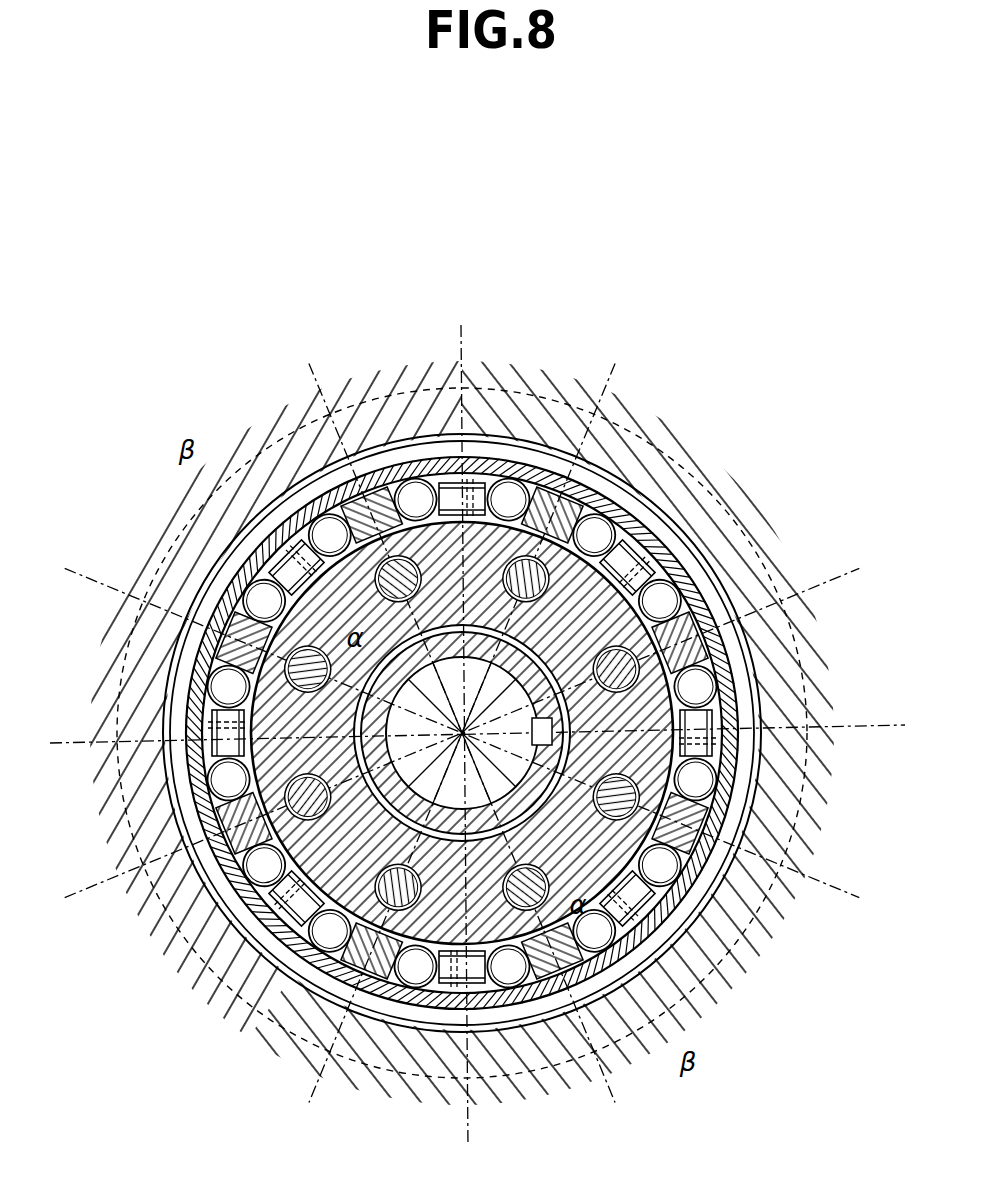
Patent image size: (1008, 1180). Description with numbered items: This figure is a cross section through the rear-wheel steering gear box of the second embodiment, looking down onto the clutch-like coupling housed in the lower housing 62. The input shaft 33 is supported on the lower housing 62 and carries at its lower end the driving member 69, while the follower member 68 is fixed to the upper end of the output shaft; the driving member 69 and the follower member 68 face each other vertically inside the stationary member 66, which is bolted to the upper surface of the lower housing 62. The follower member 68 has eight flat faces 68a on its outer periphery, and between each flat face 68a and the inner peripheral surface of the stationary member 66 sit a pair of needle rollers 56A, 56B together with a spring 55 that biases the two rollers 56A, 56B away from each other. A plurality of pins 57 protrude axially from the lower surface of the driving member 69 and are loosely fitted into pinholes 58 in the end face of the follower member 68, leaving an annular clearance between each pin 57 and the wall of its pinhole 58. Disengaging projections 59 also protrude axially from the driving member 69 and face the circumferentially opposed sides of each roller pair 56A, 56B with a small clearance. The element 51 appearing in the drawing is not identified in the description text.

The input shaft 33 is at (372, 780).
The housing boundary 51 is at (756, 583).
The spring 55 is at (505, 492).
The needle roller 56A is at (412, 492).
The needle roller 56B is at (522, 488).
The pin 57 is at (420, 575).
The pinhole 58 is at (312, 650).
The disengaging projection 59 is at (562, 503).
The lower housing 62 is at (742, 488).
The stationary member 66 is at (758, 578).
The follower member 68 is at (716, 745).
The flat face 68a is at (696, 553).
The driving member 69 is at (543, 813).